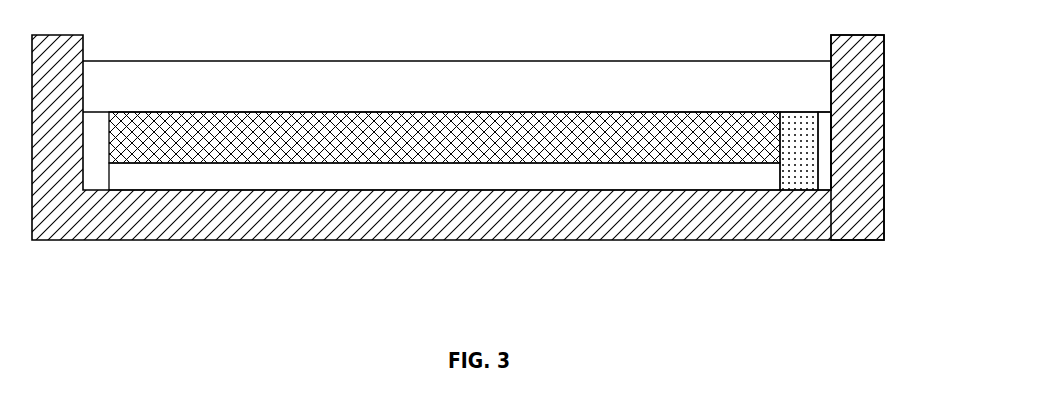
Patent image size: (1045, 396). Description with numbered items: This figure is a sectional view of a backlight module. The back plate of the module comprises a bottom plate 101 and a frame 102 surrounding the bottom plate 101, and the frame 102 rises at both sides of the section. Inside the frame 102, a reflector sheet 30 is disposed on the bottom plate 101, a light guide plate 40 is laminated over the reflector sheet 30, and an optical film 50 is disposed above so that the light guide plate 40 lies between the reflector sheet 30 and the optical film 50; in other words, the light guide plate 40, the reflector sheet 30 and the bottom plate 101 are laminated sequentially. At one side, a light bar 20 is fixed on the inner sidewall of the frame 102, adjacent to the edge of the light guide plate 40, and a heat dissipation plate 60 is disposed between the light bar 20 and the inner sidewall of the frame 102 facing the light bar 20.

The bottom plate 101 is at (458, 227).
The frame 102 is at (858, 107).
The optical film 50 is at (705, 85).
The light guide plate 40 is at (630, 145).
The reflector sheet 30 is at (555, 175).
The light bar 20 is at (793, 153).
The heat dissipation plate 60 is at (826, 150).